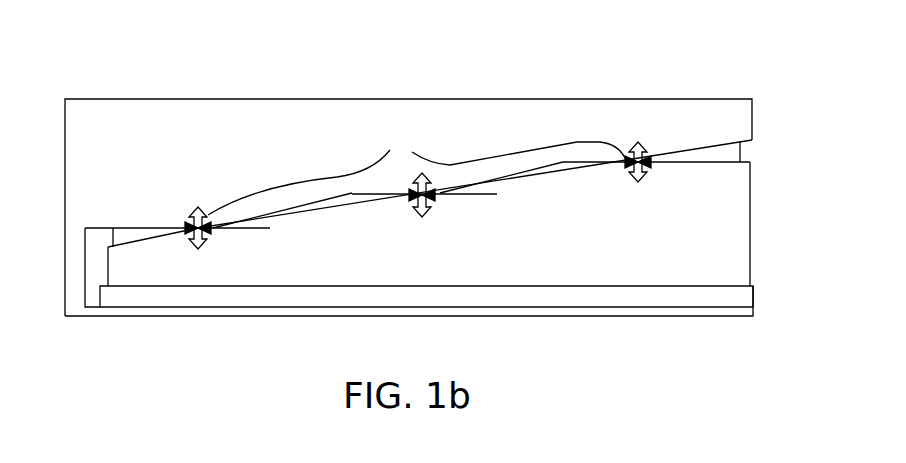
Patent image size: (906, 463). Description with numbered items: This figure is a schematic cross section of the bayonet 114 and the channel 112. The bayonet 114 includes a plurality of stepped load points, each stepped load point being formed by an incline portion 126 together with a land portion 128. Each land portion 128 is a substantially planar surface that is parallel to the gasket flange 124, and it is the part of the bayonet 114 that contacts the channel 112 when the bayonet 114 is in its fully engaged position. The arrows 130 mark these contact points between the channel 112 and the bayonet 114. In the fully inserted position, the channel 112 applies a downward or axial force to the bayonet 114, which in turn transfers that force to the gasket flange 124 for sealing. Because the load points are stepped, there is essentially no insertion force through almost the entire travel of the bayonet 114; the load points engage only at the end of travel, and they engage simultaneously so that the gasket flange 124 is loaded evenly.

The channel 112 is at (282, 155).
The bayonet 114 is at (623, 258).
The gasket flange 124 is at (753, 293).
The incline portion 126 is at (132, 243).
The land portion 128 is at (235, 229).
The arrows 130 is at (418, 173).